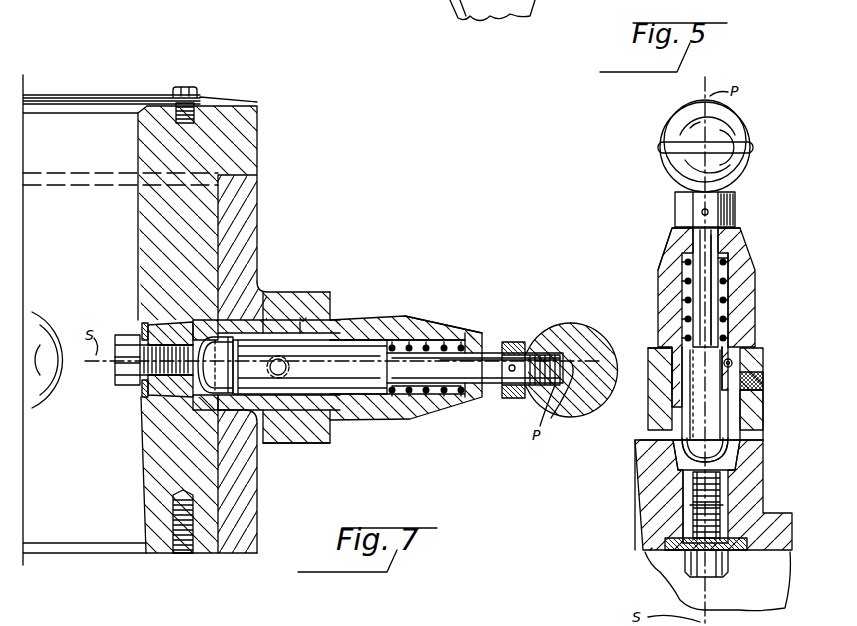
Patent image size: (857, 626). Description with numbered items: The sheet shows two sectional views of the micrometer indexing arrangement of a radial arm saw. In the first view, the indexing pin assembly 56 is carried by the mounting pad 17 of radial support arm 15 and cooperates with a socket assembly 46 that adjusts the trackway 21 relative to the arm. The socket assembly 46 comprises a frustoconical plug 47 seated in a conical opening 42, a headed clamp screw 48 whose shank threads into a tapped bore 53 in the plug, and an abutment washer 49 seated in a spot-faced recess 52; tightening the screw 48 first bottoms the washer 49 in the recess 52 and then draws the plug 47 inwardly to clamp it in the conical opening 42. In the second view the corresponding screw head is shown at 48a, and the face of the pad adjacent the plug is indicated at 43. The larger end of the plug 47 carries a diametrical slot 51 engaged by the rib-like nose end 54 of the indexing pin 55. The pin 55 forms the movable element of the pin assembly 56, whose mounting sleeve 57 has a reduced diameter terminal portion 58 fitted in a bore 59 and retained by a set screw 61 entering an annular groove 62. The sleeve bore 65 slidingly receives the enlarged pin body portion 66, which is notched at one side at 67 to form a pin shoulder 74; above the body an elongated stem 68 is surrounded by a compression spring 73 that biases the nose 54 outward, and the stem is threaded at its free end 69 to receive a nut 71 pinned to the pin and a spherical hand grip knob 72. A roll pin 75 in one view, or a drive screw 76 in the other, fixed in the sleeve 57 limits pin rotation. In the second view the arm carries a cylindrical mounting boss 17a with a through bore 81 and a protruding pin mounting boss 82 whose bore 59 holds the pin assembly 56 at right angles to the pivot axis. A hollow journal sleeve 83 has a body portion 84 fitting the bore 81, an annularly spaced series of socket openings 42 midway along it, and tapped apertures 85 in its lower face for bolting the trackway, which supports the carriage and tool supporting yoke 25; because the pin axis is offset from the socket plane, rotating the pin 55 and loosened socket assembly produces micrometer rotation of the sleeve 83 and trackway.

In FIG. 5, the radial support arm 15 is at (768, 415).
In FIG. 5, the mounting pad 17 is at (655, 398).
In FIG. 7, the cylindrical mounting boss 17a is at (271, 193).
In FIG. 5, the trackway 21 is at (631, 476).
In FIG. 7, the tool supporting yoke 25 is at (490, 31).
In FIG. 7, the conical opening 42 is at (33, 335).
In FIG. 5, the conical opening 42 is at (742, 452).
In FIG. 5, the seat face 43 is at (638, 442).
In FIG. 7, the socket assembly 46 is at (163, 394).
In FIG. 5, the socket assembly 46 is at (676, 512).
In FIG. 7, the plug 47 is at (165, 322).
In FIG. 5, the plug 47 is at (682, 500).
In FIG. 5, the clamp screw 48 is at (690, 570).
In FIG. 7, the bolt head face 48a is at (118, 383).
In FIG. 7, the abutment washer 49 is at (142, 326).
In FIG. 5, the abutment washer 49 is at (740, 550).
In FIG. 7, the slot 51 is at (204, 320).
In FIG. 5, the slot 51 is at (672, 458).
In FIG. 5, the spot-faced recess 52 is at (668, 552).
In FIG. 5, the tapped bore 53 is at (722, 482).
In FIG. 7, the nose end 54 is at (190, 390).
In FIG. 5, the nose end 54 is at (740, 460).
In FIG. 7, the indexing pin 55 is at (471, 385).
In FIG. 5, the indexing pin 55 is at (723, 292).
In FIG. 7, the indexing pin assembly 56 is at (432, 306).
In FIG. 5, the indexing pin assembly 56 is at (659, 258).
In FIG. 7, the mounting sleeve 57 is at (396, 318).
In FIG. 5, the mounting sleeve 57 is at (660, 322).
In FIG. 7, the reduced diameter terminal portion 58 is at (245, 403).
In FIG. 5, the reduced diameter terminal portion 58 is at (668, 355).
In FIG. 7, the bore 59 is at (302, 430).
In FIG. 5, the bore 59 is at (746, 408).
In FIG. 7, the set screw 61 is at (282, 362).
In FIG. 5, the set screw 61 is at (733, 362).
In FIG. 7, the annular groove 62 is at (270, 318).
In FIG. 5, the annular groove 62 is at (670, 378).
In FIG. 7, the coaxial bore 65 is at (445, 342).
In FIG. 5, the coaxial bore 65 is at (728, 312).
In FIG. 7, the enlarged pin body portion 66 is at (252, 338).
In FIG. 5, the enlarged pin body portion 66 is at (696, 415).
In FIG. 7, the notch 67 is at (330, 338).
In FIG. 5, the notch 67 is at (735, 340).
In FIG. 7, the stem 68 is at (488, 355).
In FIG. 5, the stem 68 is at (695, 240).
In FIG. 7, the threaded free end 69 is at (540, 352).
In FIG. 7, the nut 71 is at (510, 398).
In FIG. 5, the nut 71 is at (735, 200).
In FIG. 7, the spherical hand grip knob 72 is at (578, 325).
In FIG. 5, the spherical hand grip knob 72 is at (740, 118).
In FIG. 7, the compression spring 73 is at (430, 396).
In FIG. 5, the compression spring 73 is at (735, 258).
In FIG. 7, the pin shoulder 74 is at (303, 318).
In FIG. 5, the pin shoulder 74 is at (758, 378).
In FIG. 5, the roll pin 75 is at (738, 345).
In FIG. 7, the drive screw 76 is at (322, 305).
In FIG. 7, the through bore 81 is at (213, 503).
In FIG. 7, the pin mounting boss 82 is at (300, 444).
In FIG. 7, the hollow sleeve 83 is at (258, 102).
In FIG. 7, the body portion 84 is at (145, 218).
In FIG. 7, the tapped apertures 85 is at (190, 555).